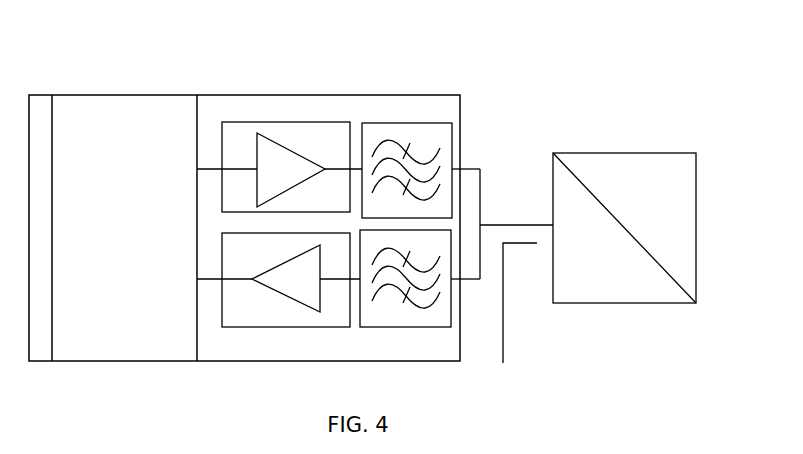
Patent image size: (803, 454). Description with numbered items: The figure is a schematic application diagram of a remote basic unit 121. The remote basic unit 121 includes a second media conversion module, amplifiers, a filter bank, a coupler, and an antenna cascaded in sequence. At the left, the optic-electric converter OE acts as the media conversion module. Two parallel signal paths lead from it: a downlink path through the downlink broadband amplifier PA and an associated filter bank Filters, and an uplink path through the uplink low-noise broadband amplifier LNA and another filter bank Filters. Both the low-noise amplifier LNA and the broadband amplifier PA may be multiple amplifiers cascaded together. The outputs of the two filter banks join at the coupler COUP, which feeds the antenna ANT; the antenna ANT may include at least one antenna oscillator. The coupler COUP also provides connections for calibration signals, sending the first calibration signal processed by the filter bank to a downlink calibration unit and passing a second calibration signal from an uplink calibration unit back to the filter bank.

The remote basic unit 121 is at (212, 82).
The optic-electric converter OE is at (124, 228).
The downlink broadband amplifier PA is at (279, 155).
The uplink low-noise broadband amplifier LNA is at (278, 293).
The filter bank Filters is at (406, 225).
The coupler COUP is at (502, 266).
The antenna ANT is at (624, 241).